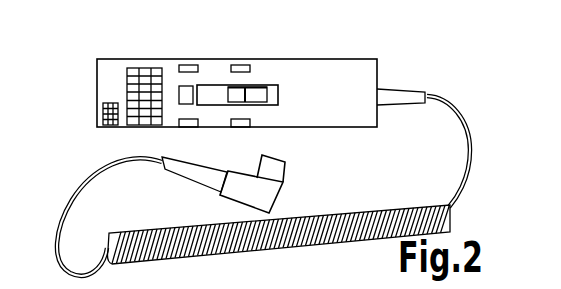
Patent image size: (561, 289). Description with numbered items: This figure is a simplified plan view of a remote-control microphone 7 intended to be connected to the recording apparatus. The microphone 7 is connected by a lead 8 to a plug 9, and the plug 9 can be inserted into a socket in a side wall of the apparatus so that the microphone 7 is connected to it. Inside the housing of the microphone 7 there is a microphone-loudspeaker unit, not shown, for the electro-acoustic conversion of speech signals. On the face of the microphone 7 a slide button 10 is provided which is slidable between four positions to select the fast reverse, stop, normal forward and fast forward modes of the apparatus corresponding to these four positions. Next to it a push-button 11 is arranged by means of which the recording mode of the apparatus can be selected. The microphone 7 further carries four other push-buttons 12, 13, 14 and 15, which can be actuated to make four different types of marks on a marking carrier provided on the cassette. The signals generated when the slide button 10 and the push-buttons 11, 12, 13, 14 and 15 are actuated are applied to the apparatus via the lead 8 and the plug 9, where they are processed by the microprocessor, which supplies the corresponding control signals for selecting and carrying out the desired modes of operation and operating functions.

The remote-control microphone 7 is at (357, 58).
The lead 8 is at (441, 222).
The plug 9 is at (273, 193).
The slide button 10 is at (260, 86).
The push-button 11 is at (178, 96).
The push-button 12 is at (190, 127).
The push-button 13 is at (191, 65).
The push-button 14 is at (248, 127).
The push-button 15 is at (242, 65).